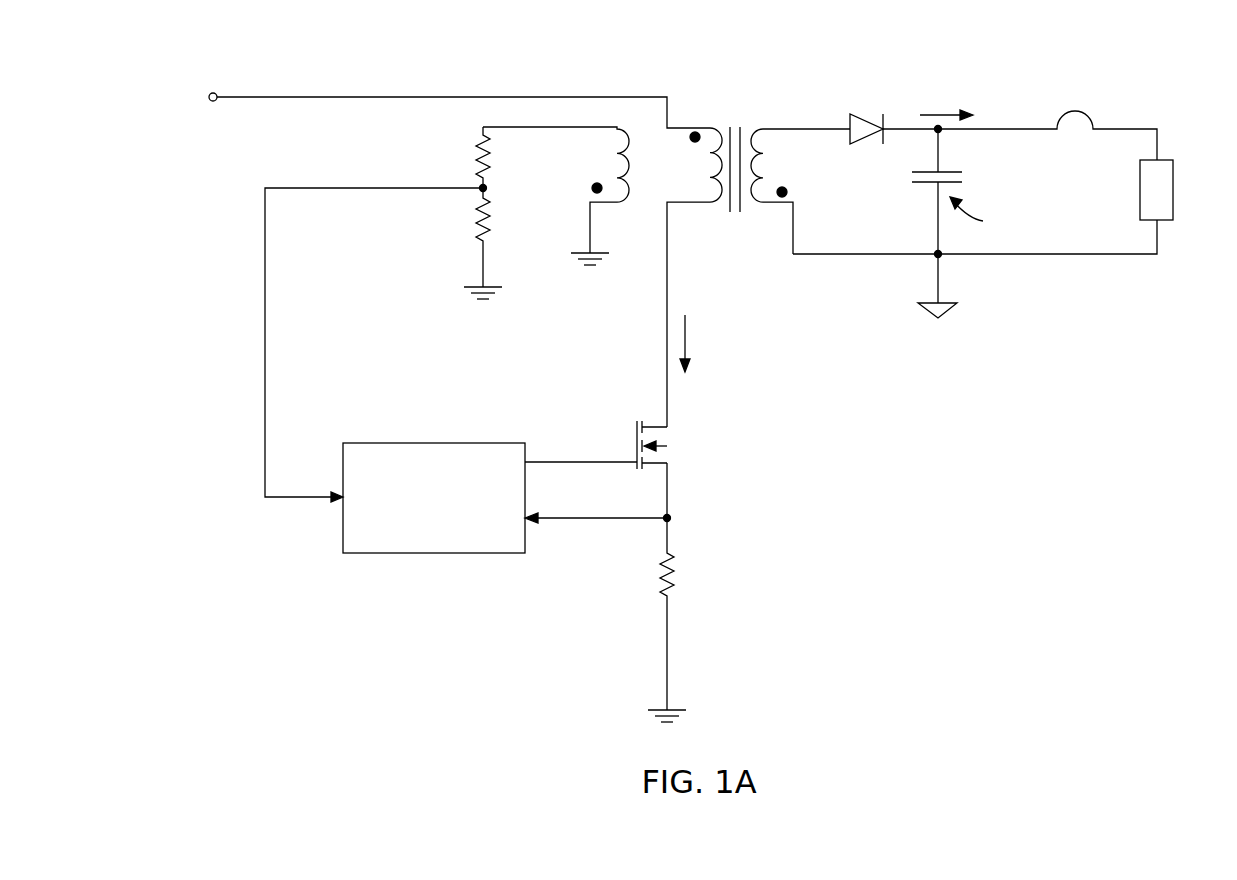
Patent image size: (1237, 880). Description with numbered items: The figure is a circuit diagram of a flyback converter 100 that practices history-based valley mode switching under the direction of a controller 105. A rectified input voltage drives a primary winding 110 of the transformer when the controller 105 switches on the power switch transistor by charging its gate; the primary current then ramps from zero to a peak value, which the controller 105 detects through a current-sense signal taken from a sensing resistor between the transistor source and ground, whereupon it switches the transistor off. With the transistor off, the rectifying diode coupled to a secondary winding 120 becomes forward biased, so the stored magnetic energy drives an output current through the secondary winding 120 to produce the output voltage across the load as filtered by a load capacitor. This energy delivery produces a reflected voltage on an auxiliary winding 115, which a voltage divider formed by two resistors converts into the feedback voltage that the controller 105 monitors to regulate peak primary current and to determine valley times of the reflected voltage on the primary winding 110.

The flyback converter 100 is at (735, 46).
The controller 105 is at (434, 443).
The primary winding 110 is at (702, 160).
The auxiliary winding 115 is at (598, 162).
The secondary winding 120 is at (783, 167).